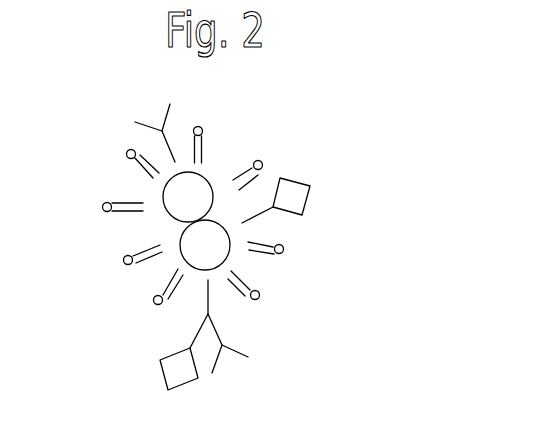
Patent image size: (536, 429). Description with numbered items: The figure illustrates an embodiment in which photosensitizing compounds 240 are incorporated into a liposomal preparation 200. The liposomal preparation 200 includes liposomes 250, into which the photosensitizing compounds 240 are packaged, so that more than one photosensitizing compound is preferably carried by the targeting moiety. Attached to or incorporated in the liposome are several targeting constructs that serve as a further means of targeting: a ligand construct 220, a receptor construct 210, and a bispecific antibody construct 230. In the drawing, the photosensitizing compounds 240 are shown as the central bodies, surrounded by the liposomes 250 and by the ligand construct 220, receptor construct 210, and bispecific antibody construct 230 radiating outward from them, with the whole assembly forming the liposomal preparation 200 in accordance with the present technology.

The liposomal preparation 200 is at (295, 300).
The receptor construct 210 is at (172, 113).
The ligand construct 220 is at (305, 205).
The bispecific antibody construct 230 is at (190, 345).
The photosensitizing compounds 240 is at (182, 256).
The liposomes 250 is at (107, 202).